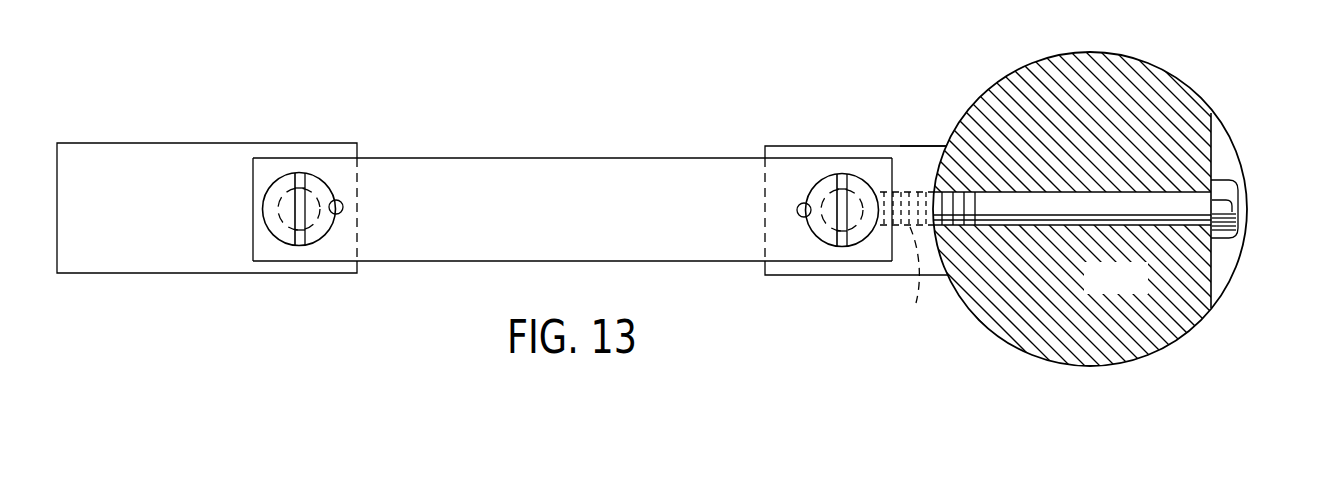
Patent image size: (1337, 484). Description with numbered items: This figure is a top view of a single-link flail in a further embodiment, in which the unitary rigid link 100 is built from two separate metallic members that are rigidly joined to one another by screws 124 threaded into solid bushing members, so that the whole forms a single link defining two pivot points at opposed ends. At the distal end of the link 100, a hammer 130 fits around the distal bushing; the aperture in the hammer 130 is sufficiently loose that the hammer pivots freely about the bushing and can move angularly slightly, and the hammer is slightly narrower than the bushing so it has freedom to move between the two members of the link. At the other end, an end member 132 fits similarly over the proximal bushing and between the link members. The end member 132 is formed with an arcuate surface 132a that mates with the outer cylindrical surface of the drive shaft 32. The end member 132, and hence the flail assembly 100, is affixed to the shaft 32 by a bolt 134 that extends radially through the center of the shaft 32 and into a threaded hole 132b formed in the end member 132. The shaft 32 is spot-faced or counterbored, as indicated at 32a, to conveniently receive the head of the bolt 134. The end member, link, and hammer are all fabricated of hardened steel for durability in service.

The unitary rigid link 100 is at (430, 307).
The screws 124 is at (318, 182).
The hammer 130 is at (132, 275).
The end member 132 is at (795, 146).
The arcuate surface 132a is at (938, 148).
The threaded hole 132b is at (885, 280).
The bolt 134 is at (1160, 227).
The shaft 32 is at (1048, 362).
The spot-faced or counterbored portion 32a is at (1212, 165).